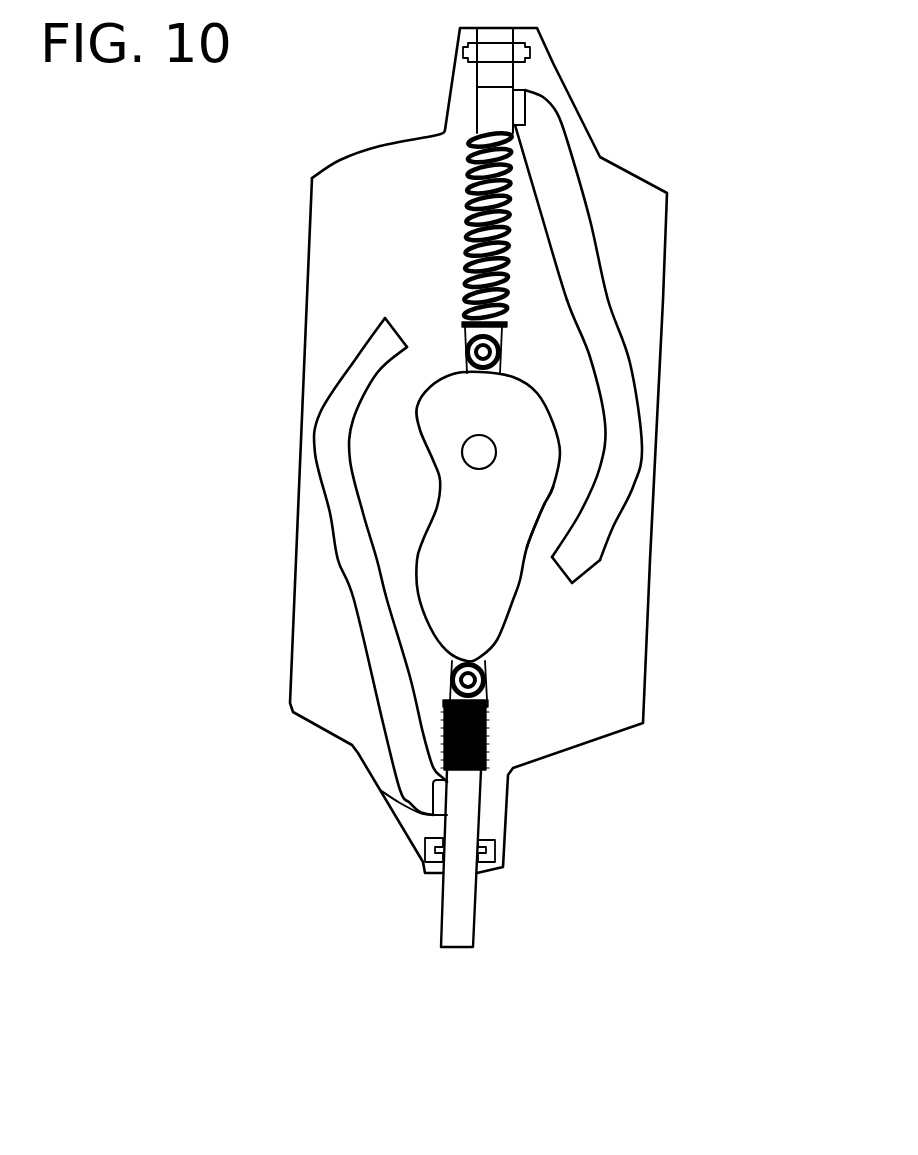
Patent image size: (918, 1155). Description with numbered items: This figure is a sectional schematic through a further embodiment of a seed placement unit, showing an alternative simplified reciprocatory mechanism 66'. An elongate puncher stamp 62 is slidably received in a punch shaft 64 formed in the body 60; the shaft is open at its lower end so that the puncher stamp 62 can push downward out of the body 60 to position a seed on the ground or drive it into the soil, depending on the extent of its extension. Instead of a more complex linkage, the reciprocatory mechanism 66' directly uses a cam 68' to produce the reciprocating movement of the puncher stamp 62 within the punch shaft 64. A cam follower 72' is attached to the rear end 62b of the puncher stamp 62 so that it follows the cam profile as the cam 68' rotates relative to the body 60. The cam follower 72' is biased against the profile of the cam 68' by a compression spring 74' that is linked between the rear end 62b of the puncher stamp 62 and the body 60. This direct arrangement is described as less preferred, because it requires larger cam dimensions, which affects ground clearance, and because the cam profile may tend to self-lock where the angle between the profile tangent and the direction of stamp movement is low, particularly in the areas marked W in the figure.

The body 60 is at (590, 195).
The puncher stamp 62 is at (460, 908).
The rear end of puncher stamp 62b is at (495, 686).
The punch shaft 64 is at (483, 660).
The simplified reciprocatory mechanism 66' is at (620, 462).
The cam 68' is at (369, 470).
The cam follower 72' is at (583, 701).
The compression spring 74' is at (329, 697).
The areas of potential self-locking W is at (423, 543).